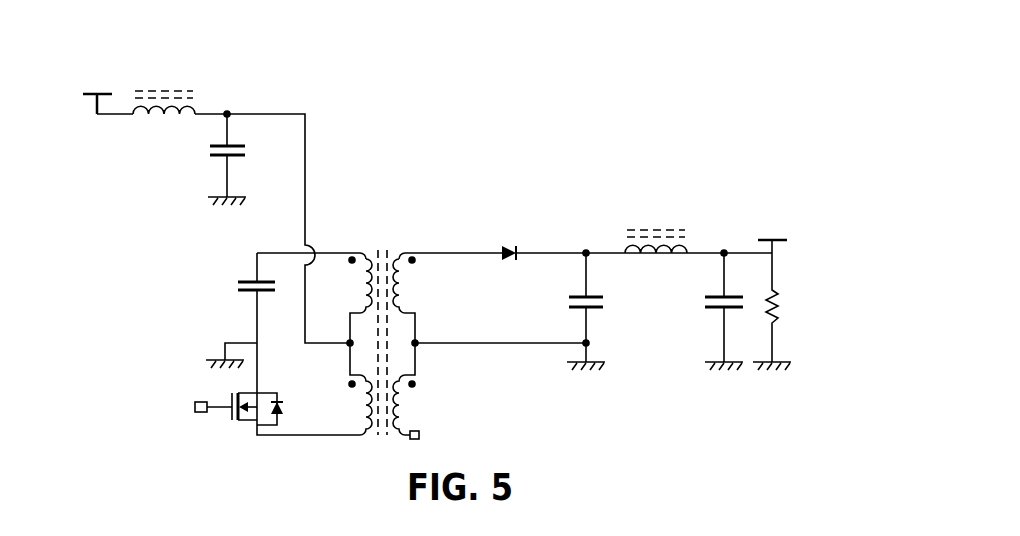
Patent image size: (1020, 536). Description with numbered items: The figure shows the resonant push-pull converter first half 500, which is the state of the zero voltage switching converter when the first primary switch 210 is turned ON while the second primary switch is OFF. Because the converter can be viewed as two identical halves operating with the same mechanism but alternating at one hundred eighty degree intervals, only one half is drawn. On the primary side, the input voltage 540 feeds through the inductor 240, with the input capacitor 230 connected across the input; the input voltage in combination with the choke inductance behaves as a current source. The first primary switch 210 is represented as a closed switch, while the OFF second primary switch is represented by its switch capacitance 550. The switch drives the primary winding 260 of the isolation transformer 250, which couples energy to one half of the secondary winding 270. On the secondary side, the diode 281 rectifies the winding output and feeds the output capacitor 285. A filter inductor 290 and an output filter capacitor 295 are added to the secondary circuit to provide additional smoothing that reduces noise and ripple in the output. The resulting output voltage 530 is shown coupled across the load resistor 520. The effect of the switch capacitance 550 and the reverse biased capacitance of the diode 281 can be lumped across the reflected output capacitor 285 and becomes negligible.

The resonant push-pull converter first half 500 is at (727, 57).
The input voltage Vin 540 is at (88, 60).
The inductor Lin 240 is at (183, 75).
The input capacitor Cin 230 is at (167, 153).
The switch capacitance CossS2 550 is at (142, 283).
The first primary switch S1 210 is at (218, 433).
The isolation transformer T1 250 is at (385, 210).
The primary winding 260 is at (364, 408).
The secondary winding 270 is at (401, 408).
The diode D1 281 is at (532, 223).
The output capacitor Co 285 is at (625, 312).
The filter inductor LF 290 is at (673, 212).
The output filter capacitor CF 295 is at (685, 312).
The output voltage Vout 530 is at (800, 215).
The load resistor RL 520 is at (812, 283).